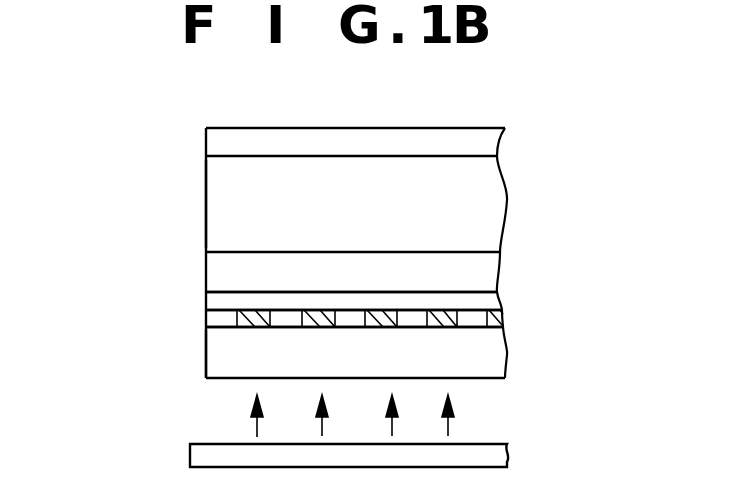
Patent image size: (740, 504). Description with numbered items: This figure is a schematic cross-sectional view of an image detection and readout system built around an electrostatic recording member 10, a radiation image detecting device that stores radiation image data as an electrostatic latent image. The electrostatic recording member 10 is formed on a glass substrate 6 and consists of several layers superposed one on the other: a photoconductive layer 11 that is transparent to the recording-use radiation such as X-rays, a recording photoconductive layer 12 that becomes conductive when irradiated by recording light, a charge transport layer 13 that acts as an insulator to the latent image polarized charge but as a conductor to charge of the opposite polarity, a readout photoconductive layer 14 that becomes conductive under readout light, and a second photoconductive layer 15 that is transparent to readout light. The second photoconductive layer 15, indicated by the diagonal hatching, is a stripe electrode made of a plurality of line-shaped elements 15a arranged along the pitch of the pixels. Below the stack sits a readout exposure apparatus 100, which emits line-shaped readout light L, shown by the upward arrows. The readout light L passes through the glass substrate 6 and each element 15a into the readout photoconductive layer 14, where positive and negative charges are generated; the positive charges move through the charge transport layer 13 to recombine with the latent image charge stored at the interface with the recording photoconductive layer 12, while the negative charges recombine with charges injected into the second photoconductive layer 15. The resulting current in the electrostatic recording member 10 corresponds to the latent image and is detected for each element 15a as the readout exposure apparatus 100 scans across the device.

The electrostatic recording member 10 is at (169, 185).
The photoconductive layer 11 is at (212, 147).
The recording photoconductive layer 12 is at (215, 212).
The charge transport layer 13 is at (216, 271).
The readout photoconductive layer 14 is at (216, 301).
The second photoconductive layer 15 is at (322, 329).
The element 15a is at (247, 328).
The glass substrate 6 is at (216, 370).
The readout light L is at (257, 427).
The readout exposure apparatus 100 is at (199, 457).